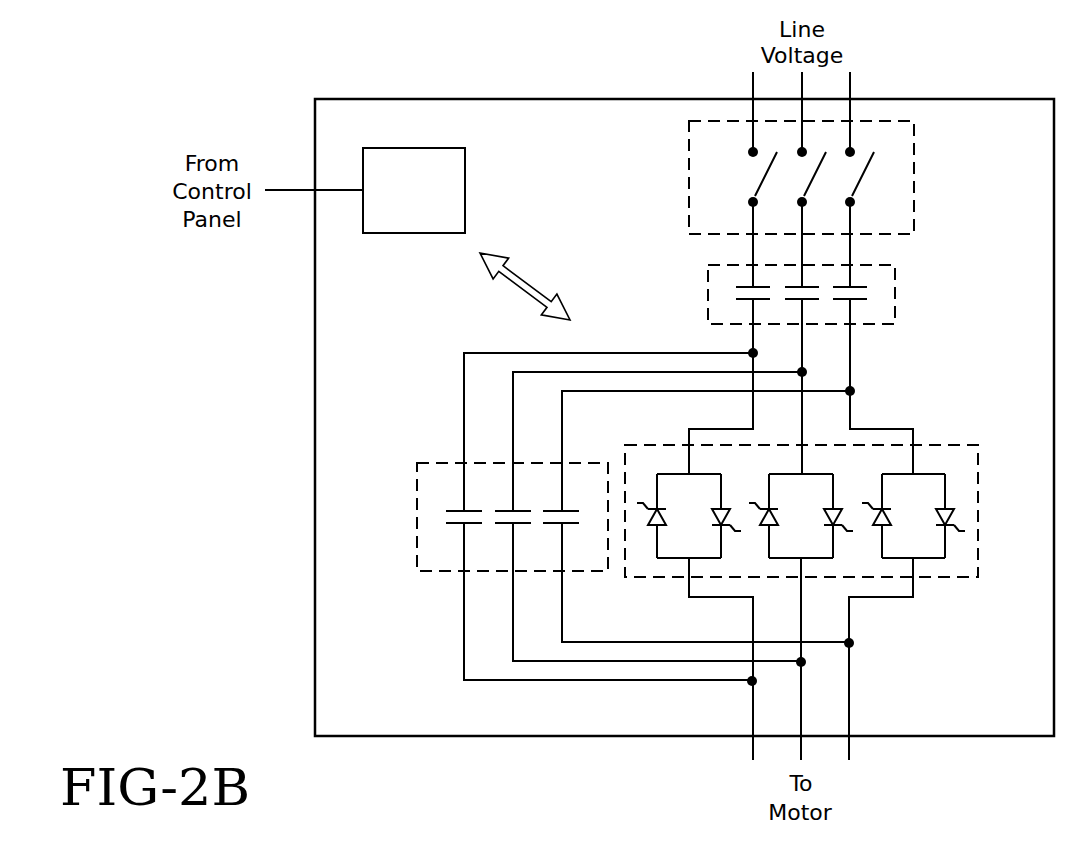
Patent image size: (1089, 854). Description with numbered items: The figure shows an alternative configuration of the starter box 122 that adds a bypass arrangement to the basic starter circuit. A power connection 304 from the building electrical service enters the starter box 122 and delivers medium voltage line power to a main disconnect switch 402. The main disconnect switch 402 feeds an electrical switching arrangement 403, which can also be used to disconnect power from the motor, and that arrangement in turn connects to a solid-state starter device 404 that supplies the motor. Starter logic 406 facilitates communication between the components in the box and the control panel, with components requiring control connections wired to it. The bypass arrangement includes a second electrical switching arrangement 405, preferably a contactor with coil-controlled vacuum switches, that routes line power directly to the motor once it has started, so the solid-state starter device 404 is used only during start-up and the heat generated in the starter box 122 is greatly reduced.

The starter box 122 is at (313, 582).
The power connection 304 is at (752, 92).
The main disconnect switch 402 is at (915, 197).
The electrical switching arrangement 403 is at (708, 300).
The solid-state starter device 404 is at (950, 445).
The second electrical switching arrangement 405 is at (417, 517).
The starter logic 406 is at (413, 233).